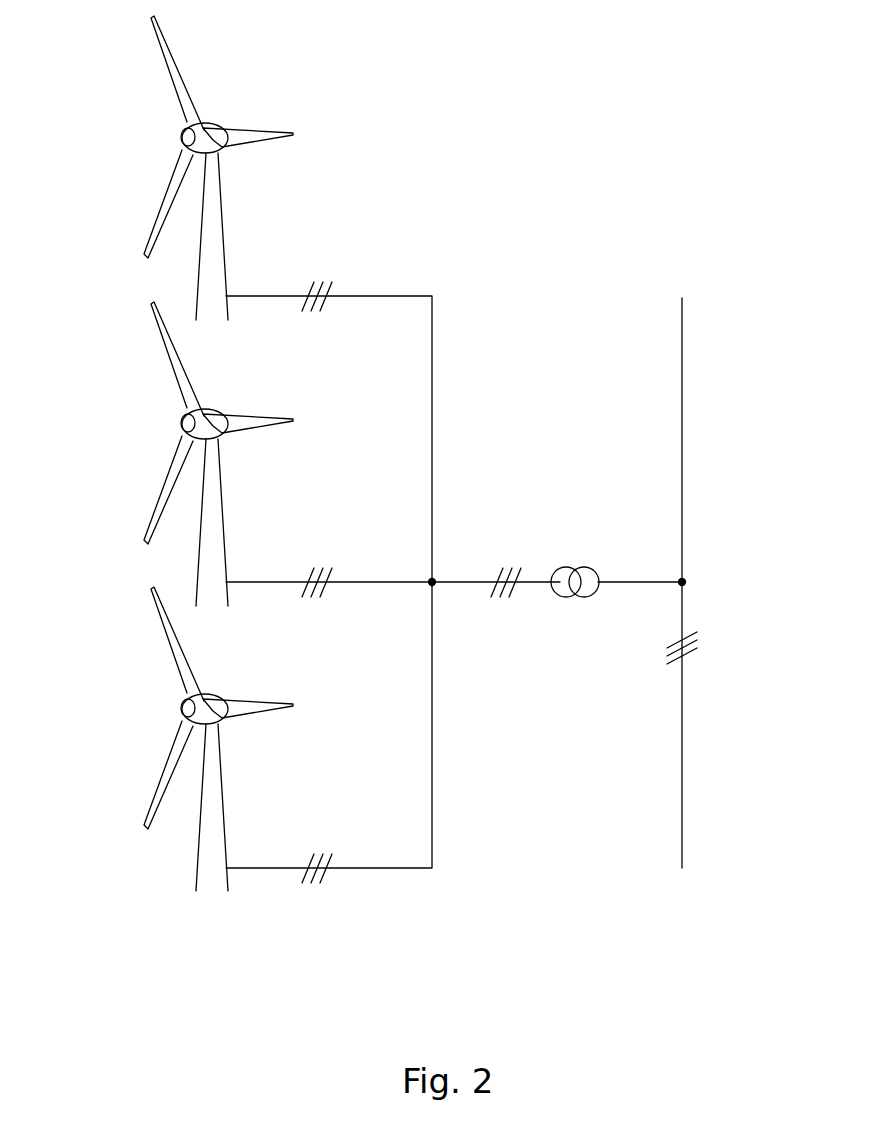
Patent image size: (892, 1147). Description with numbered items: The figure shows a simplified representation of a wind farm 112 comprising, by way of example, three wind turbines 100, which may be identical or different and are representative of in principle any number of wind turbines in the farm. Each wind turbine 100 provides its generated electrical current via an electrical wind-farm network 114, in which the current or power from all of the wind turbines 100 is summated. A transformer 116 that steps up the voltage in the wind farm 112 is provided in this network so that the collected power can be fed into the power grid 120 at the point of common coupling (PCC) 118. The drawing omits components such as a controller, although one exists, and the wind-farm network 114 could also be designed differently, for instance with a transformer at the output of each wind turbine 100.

The wind turbine 100 is at (217, 220).
The wind farm 112 is at (500, 137).
The electrical wind-farm network 114 is at (452, 582).
The transformer 116 is at (575, 565).
The point of common coupling (PCC) 118 is at (688, 571).
The power grid 120 is at (682, 328).